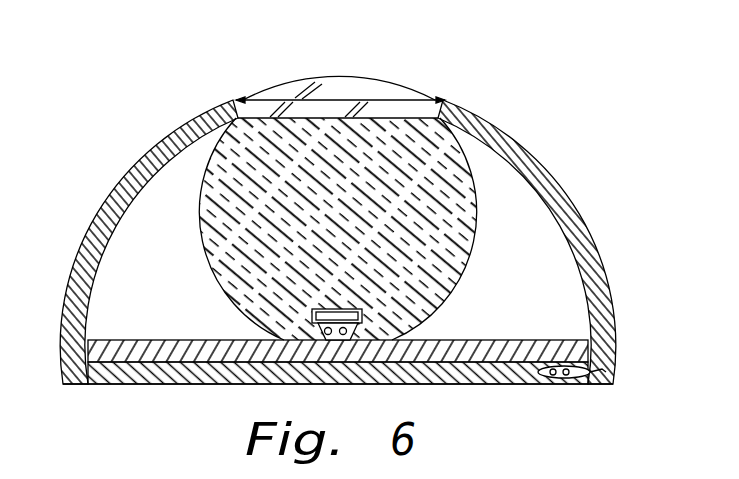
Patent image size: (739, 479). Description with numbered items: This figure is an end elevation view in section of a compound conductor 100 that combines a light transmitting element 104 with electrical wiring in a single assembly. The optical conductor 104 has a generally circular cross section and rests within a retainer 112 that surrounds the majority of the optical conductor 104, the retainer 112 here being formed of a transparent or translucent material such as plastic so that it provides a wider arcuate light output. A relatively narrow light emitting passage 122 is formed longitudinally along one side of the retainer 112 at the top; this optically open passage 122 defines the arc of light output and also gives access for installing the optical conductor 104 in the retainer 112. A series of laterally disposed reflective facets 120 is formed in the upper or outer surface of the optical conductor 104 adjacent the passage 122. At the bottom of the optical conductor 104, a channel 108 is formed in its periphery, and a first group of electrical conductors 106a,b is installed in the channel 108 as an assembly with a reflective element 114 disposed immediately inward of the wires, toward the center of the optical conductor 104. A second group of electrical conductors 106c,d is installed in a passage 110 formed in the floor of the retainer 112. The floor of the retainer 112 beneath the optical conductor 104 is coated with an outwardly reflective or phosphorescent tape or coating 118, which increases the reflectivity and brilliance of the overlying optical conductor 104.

The compound conductor 100 is at (176, 405).
The light transmitting element 104 is at (200, 235).
The first group of electrical conductors 106a,b is at (343, 336).
The second group of electrical conductors 106c,d is at (568, 385).
The channel 108 is at (312, 318).
The passage 110 is at (604, 372).
The retainer 112 is at (140, 162).
The reflective element 114 is at (388, 323).
The reflective or phosphorescent coating 118 is at (505, 338).
The reflective facets 120 is at (340, 88).
The light emitting passage 122 is at (312, 100).